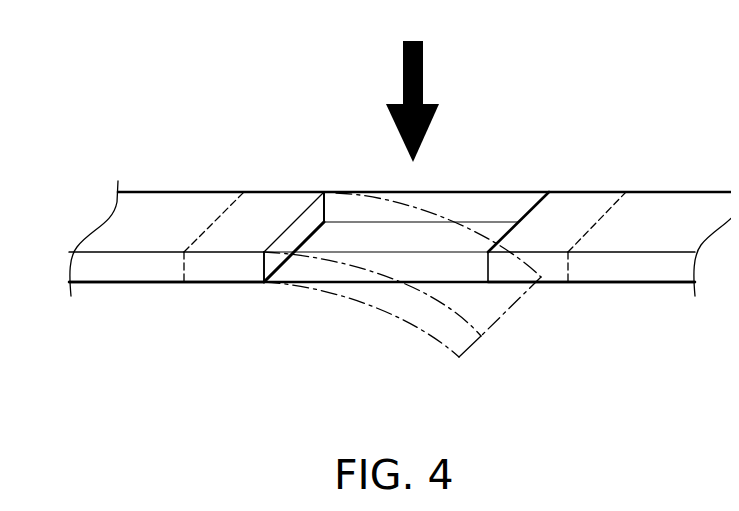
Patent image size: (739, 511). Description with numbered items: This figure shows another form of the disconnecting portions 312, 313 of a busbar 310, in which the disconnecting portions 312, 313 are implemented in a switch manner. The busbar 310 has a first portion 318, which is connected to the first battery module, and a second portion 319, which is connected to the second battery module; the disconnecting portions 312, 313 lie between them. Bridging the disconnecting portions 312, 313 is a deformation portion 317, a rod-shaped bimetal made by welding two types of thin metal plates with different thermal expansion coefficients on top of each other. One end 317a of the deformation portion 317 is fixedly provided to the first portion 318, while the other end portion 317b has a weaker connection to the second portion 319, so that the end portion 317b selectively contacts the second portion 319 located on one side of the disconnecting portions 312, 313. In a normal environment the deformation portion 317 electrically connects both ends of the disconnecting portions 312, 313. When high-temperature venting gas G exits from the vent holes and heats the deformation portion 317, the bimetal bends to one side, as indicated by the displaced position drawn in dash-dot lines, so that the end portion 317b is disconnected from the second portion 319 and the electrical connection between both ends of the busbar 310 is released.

The busbar 310 is at (166, 180).
The disconnecting portion 312 is at (437, 211).
The disconnecting portion 313 is at (625, 186).
The deformation portion 317 is at (400, 310).
The one end of the deformation portion 317a is at (265, 292).
The end portion of the deformation portion 317b is at (481, 348).
The first portion 318 is at (113, 284).
The second portion 319 is at (632, 276).
The venting gas G is at (420, 78).